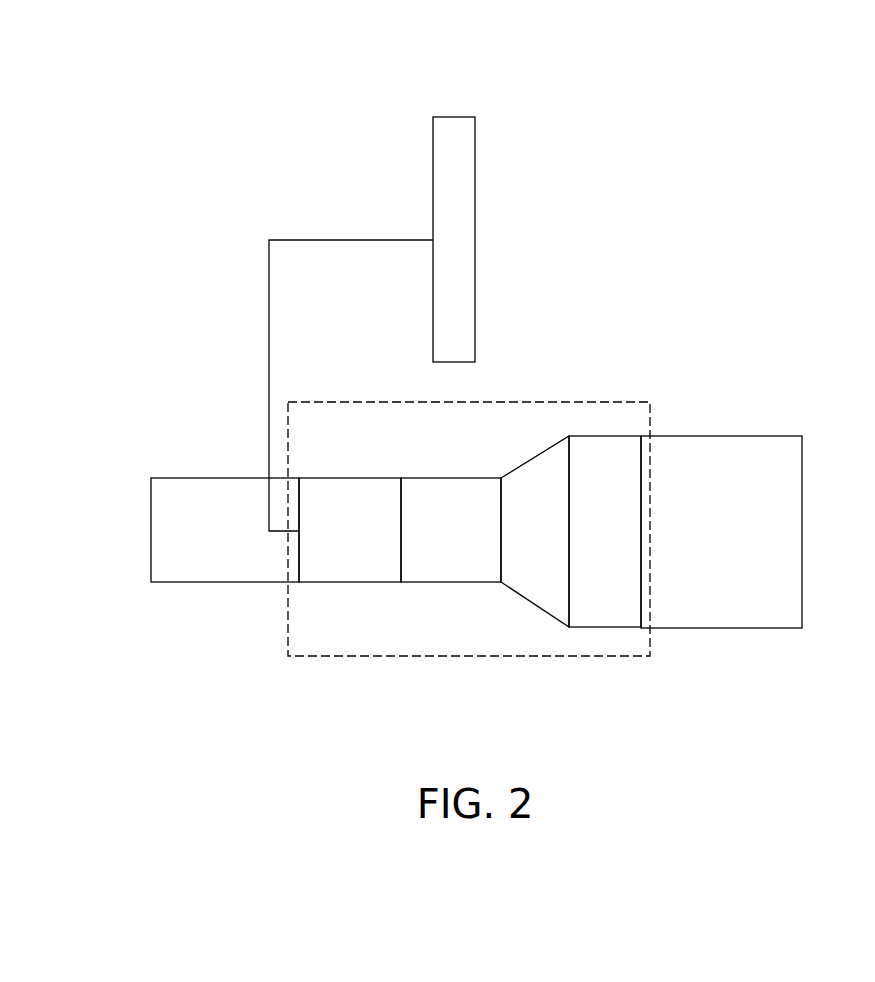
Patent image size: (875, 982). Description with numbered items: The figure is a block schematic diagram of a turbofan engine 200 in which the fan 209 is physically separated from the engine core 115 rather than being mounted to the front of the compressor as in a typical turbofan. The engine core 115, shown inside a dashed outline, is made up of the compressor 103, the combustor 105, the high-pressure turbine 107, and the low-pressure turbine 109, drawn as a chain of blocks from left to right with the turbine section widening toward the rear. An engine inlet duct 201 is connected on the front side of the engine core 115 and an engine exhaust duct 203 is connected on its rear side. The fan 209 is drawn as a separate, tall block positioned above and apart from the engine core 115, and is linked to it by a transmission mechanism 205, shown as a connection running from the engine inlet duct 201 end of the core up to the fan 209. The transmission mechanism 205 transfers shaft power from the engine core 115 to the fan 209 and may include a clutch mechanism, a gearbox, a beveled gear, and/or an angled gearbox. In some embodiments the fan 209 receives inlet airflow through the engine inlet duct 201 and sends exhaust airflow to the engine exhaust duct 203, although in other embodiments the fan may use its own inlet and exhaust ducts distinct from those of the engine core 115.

The turbofan engine 200 is at (112, 147).
The engine core 115 is at (600, 402).
The engine inlet duct 201 is at (193, 538).
The compressor 103 is at (333, 538).
The combustor 105 is at (432, 538).
The high-pressure turbine 107 is at (520, 538).
The low-pressure turbine 109 is at (590, 538).
The engine exhaust duct 203 is at (702, 538).
The transmission mechanism 205 is at (269, 338).
The fan 209 is at (447, 117).